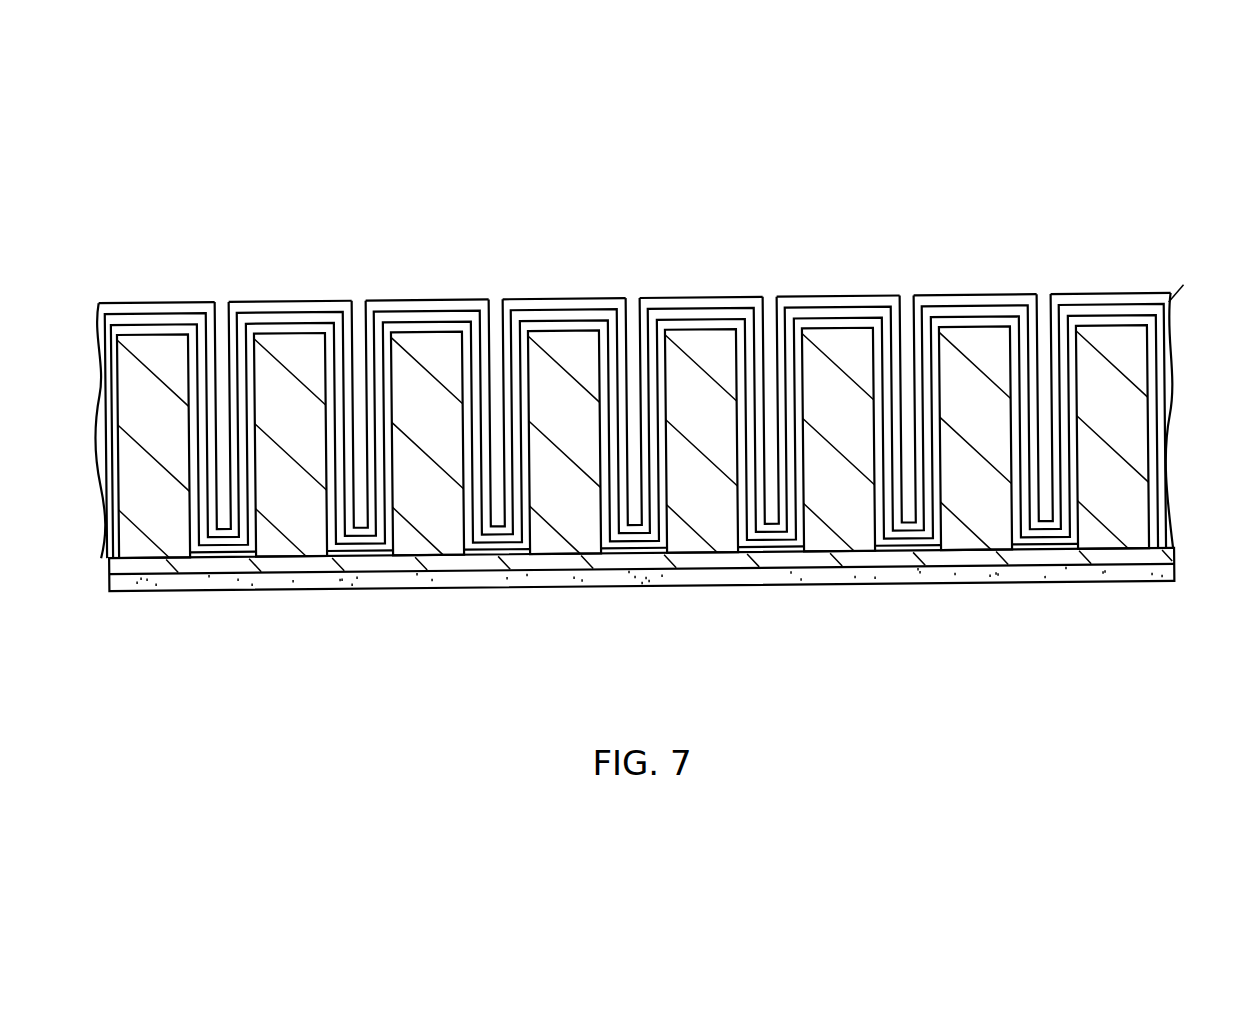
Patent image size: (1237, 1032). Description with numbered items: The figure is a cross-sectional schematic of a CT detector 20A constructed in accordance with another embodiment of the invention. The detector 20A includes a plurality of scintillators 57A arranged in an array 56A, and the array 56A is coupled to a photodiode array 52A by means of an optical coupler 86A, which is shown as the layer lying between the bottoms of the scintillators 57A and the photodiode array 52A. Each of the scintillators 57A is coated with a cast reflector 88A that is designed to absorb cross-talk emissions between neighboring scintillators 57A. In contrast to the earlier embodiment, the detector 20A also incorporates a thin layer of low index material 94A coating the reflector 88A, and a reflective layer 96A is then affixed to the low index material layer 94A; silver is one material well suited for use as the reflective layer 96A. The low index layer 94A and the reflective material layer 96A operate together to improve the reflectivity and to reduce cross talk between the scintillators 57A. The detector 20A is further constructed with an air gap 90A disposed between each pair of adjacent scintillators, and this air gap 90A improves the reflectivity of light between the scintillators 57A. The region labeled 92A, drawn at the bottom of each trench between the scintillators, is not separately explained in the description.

The CT detector 20A is at (995, 101).
The photodiode array 52A is at (1162, 587).
The scintillator array 56A is at (1192, 371).
The scintillators 57A is at (148, 540).
The optical coupler 86A is at (1178, 561).
The cast reflector 88A is at (162, 302).
The air gap 90A is at (220, 285).
The trench bottoms 92A is at (217, 550).
The low index material layer 94A is at (128, 302).
The reflective layer 96A is at (182, 302).